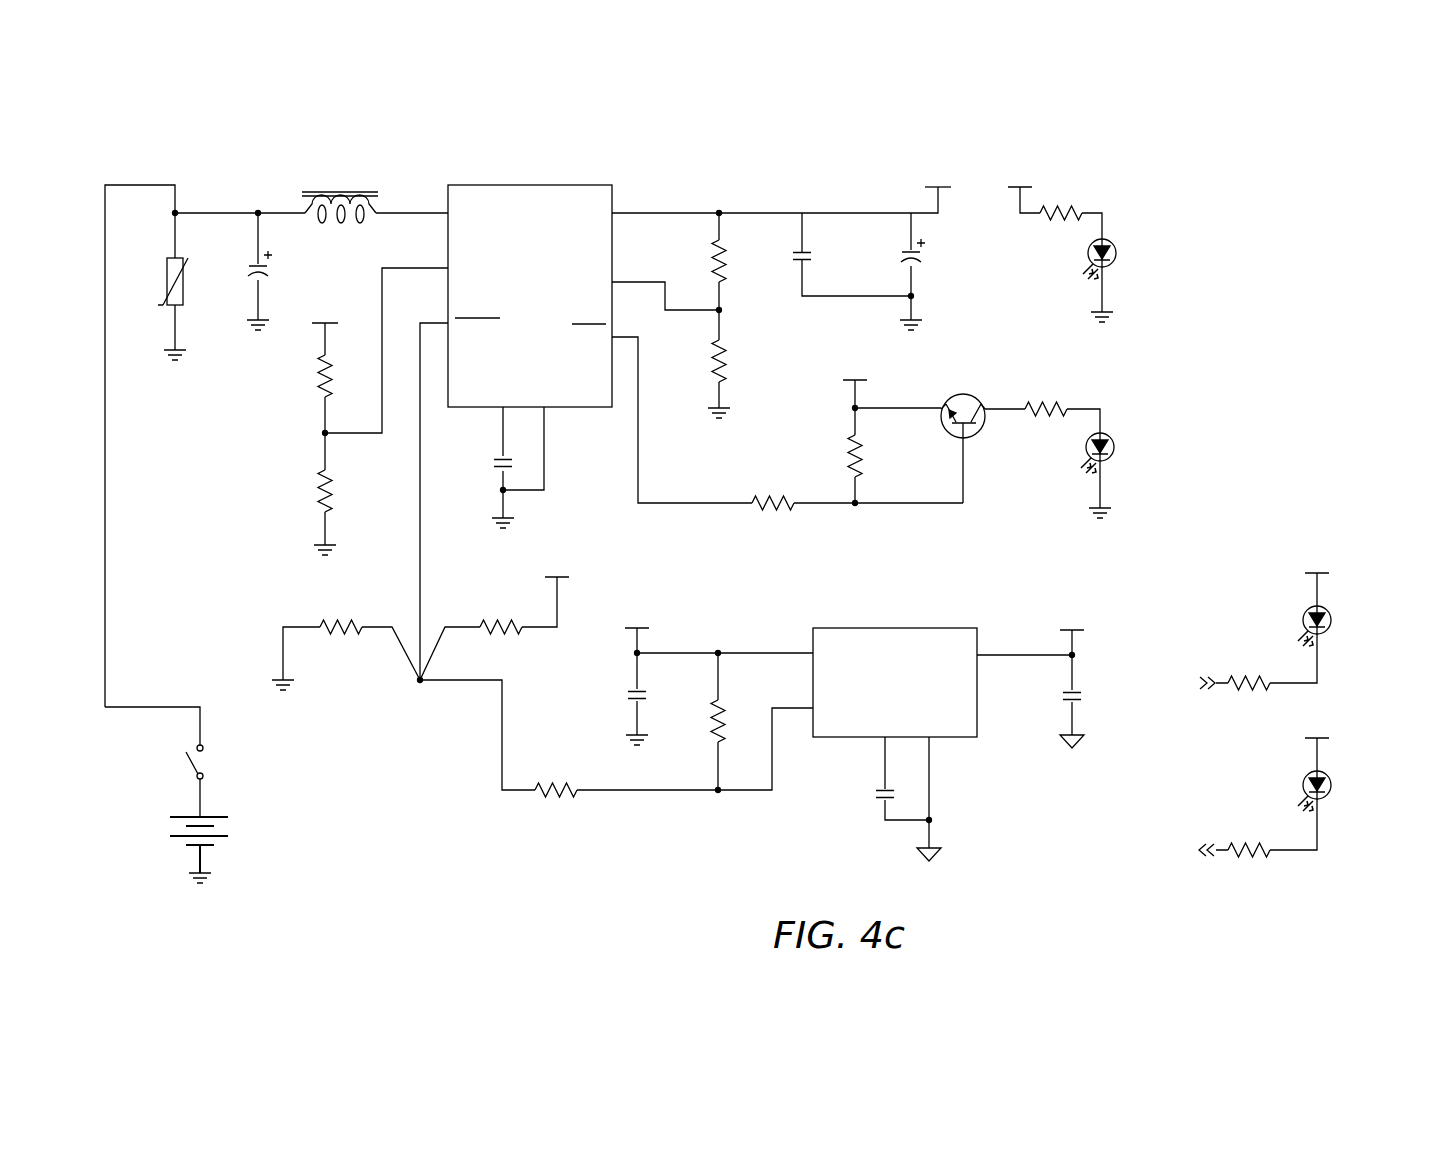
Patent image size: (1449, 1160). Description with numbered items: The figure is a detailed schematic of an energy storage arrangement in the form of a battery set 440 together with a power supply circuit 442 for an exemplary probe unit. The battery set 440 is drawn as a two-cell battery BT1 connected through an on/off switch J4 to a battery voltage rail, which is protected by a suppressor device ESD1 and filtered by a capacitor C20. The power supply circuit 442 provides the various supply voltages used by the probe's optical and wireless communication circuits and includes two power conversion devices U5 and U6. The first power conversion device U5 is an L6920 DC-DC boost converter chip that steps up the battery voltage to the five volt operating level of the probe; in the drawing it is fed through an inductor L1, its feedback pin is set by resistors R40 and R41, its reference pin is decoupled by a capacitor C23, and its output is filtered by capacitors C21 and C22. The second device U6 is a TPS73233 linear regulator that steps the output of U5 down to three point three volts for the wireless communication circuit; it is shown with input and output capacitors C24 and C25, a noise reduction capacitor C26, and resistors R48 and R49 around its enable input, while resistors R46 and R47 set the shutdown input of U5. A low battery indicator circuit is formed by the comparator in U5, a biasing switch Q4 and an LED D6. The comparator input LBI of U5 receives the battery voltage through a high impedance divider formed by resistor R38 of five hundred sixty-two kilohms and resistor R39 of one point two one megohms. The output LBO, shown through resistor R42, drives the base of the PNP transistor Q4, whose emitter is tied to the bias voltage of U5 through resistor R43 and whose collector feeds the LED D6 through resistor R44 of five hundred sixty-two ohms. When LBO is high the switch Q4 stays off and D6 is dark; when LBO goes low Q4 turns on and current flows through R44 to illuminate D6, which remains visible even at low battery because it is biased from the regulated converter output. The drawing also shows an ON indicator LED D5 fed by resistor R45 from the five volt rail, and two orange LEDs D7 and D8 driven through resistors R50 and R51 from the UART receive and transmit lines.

The battery set 440 is at (213, 817).
The power supply circuit 442 is at (1283, 180).
The L6920 DC-DC boost converter chip U5 is at (528, 286).
The TPS73233 linear voltage regulator U6 is at (895, 676).
The biasing switch Q4 is at (962, 424).
The inductor L1 is at (340, 196).
The ESD suppressor ESD1 is at (156, 298).
The on/off switch J4 is at (155, 777).
The battery (2) AA BT1 is at (169, 849).
The LED ON - Green D5 is at (1145, 280).
The LED D6 is at (1135, 475).
The LED RF_Rx - Orange D7 is at (1359, 628).
The LED RF_Tx - Orange D8 is at (1359, 794).
The capacitor 47uF C20 is at (239, 271).
The capacitor 1uF C21 is at (832, 254).
The capacitor 47uF C22 is at (892, 271).
The capacitor 0.1uF C23 is at (493, 467).
The capacitor 1uF C24 is at (618, 699).
The capacitor 0.1uF C25 is at (1046, 701).
The capacitor 10nF C26 is at (877, 778).
The resistor R38 is at (300, 394).
The resistor R39 is at (288, 494).
The resistor 1.21M R40 is at (692, 261).
The resistor 383k R41 is at (697, 364).
The resistor 47.5k R42 is at (856, 483).
The resistor 475k R43 is at (871, 441).
The resistor R44 is at (1042, 396).
The resistor 562 R45 is at (1071, 203).
The resistor 47.5k R46 is at (346, 633).
The resistor 47.5k R47 is at (494, 628).
The resistor 0 R48 is at (616, 738).
The resistor 0 R49 is at (698, 721).
The resistor 562 R50 is at (1235, 662).
The resistor 562 R51 is at (1234, 829).